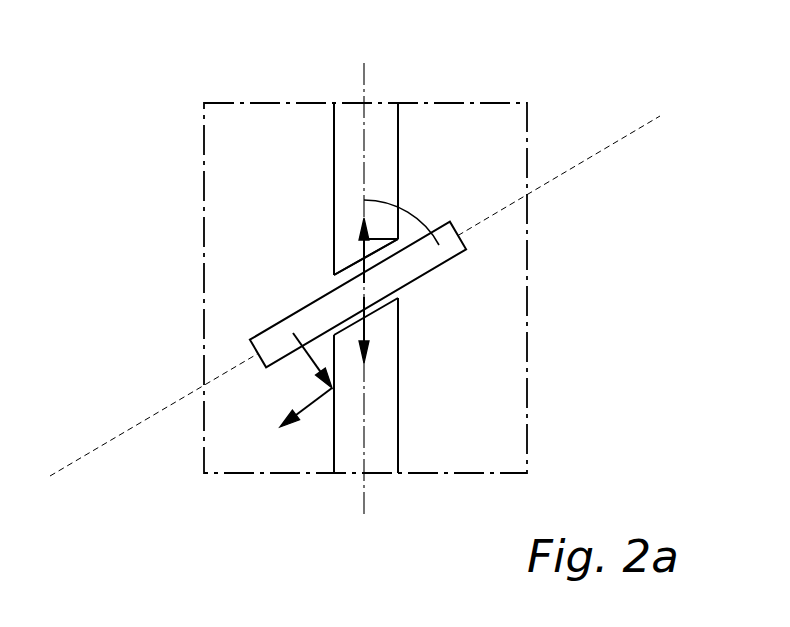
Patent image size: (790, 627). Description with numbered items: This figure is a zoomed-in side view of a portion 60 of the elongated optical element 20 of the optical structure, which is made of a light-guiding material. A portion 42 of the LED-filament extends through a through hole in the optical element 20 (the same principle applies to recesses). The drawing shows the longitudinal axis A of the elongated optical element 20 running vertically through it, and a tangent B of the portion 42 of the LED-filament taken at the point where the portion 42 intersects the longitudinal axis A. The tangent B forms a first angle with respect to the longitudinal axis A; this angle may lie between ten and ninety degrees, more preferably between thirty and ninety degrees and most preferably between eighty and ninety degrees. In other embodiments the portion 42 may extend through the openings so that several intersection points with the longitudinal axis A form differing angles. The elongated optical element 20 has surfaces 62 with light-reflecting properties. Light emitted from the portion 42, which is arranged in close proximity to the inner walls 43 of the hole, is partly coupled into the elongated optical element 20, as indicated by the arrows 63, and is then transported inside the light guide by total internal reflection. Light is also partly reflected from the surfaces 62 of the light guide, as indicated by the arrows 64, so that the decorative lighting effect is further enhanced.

The elongated optical element 20 is at (350, 153).
The portion of the LED-filament 42 is at (450, 243).
The inner walls of the hole 43 is at (345, 268).
The zoomed-in portion of the optical element 60 is at (203, 175).
The surface with light-reflecting properties 62 is at (334, 427).
The arrows indicating coupled light 63 is at (398, 239).
The arrows indicating reflected light 64 is at (313, 361).
The longitudinal axis A is at (365, 88).
The tangent of the LED-filament portion B is at (615, 143).